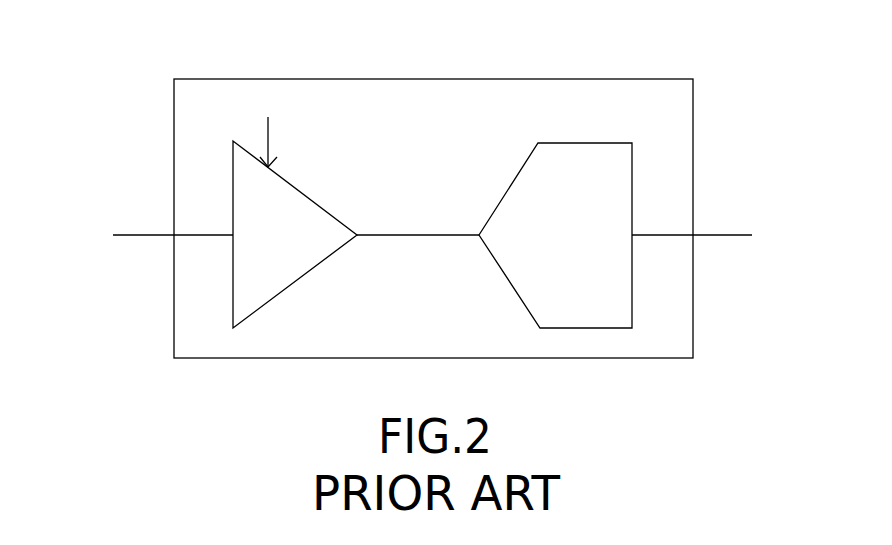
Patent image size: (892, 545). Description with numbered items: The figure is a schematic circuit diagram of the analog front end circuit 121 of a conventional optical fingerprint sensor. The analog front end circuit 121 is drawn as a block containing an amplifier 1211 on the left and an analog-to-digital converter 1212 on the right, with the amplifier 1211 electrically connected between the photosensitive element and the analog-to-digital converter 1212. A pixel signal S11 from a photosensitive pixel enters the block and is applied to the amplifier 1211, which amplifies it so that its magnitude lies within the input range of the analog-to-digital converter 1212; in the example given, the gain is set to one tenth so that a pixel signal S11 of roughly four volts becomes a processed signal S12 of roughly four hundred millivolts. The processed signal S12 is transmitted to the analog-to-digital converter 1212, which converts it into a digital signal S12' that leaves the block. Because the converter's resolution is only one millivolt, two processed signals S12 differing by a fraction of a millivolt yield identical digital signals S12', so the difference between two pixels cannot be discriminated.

The analog front end circuit 121 is at (593, 69).
The amplifier 1211 is at (283, 200).
The analog-to-digital converter 1212 is at (583, 157).
The pixel signal S11 is at (160, 220).
The processed signal S12 is at (418, 212).
The digital signal S12' is at (706, 212).